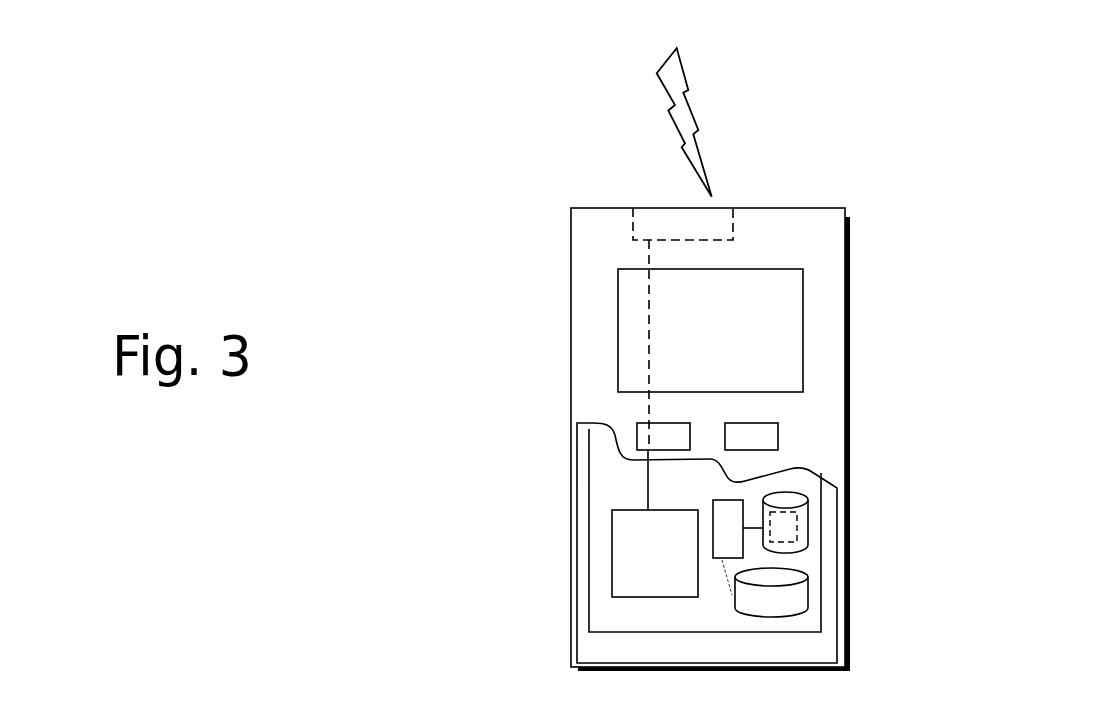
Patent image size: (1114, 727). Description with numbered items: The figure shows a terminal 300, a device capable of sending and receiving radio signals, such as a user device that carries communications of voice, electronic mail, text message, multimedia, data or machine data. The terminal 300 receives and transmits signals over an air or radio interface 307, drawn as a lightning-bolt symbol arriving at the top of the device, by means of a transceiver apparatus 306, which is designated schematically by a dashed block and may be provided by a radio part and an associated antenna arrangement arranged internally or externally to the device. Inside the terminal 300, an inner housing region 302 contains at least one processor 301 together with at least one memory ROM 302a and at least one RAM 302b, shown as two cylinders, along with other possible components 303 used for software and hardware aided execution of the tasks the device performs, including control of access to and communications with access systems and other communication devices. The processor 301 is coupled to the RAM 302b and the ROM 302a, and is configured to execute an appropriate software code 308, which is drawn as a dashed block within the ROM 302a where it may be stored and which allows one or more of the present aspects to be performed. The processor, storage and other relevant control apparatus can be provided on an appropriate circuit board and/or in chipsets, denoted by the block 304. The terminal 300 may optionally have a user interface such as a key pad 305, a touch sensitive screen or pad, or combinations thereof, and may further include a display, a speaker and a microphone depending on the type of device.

The terminal 300 is at (571, 247).
The processor 301 is at (728, 515).
The housing 302 is at (612, 615).
The memory ROM 302a is at (808, 528).
The RAM 302b is at (778, 592).
The other possible components 303 is at (637, 433).
The circuit board and/or chipsets 304 is at (618, 539).
The key pad 305 is at (633, 319).
The transceiver apparatus 306 is at (727, 223).
The air or radio interface 307 is at (712, 145).
The software code 308 is at (778, 532).